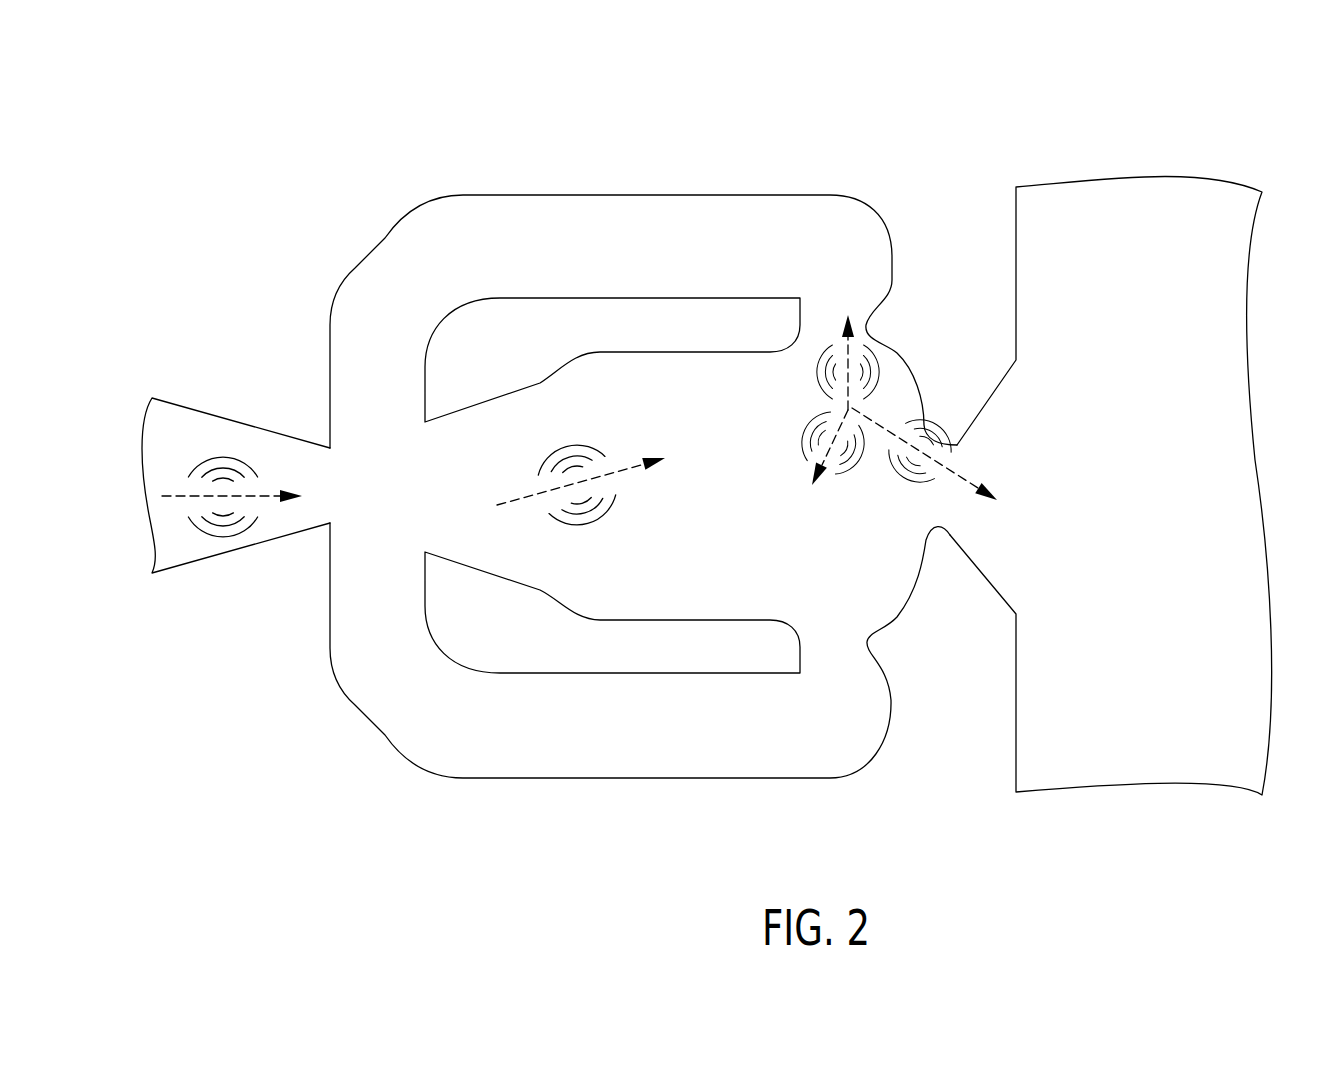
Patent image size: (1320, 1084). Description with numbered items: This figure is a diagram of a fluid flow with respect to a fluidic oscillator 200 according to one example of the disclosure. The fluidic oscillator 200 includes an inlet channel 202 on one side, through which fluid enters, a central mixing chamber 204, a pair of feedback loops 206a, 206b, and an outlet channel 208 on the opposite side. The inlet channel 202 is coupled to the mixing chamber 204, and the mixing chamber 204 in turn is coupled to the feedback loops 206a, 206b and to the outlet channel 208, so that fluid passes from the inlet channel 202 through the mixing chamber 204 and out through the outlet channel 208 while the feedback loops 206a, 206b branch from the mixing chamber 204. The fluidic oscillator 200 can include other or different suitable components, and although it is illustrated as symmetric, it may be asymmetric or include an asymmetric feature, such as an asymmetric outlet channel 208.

The fluidic oscillator 200 is at (192, 132).
The inlet channel 202 is at (218, 543).
The mixing chamber 204 is at (507, 447).
The feedback loop 206a is at (608, 260).
The feedback loop 206b is at (578, 760).
The outlet channel 208 is at (1002, 557).